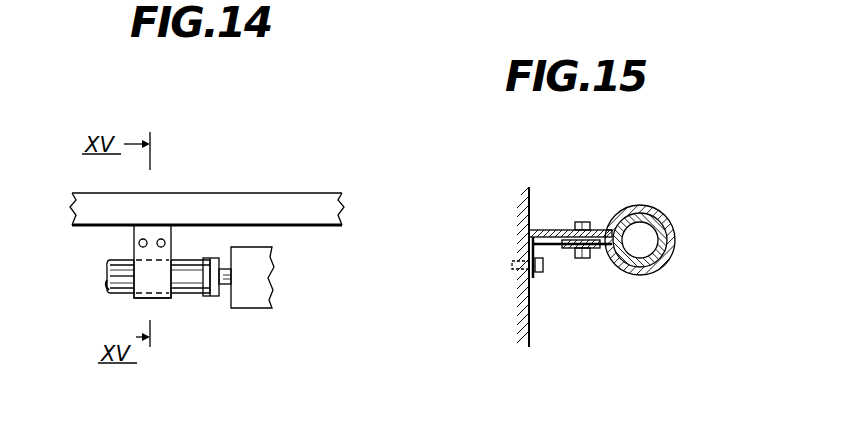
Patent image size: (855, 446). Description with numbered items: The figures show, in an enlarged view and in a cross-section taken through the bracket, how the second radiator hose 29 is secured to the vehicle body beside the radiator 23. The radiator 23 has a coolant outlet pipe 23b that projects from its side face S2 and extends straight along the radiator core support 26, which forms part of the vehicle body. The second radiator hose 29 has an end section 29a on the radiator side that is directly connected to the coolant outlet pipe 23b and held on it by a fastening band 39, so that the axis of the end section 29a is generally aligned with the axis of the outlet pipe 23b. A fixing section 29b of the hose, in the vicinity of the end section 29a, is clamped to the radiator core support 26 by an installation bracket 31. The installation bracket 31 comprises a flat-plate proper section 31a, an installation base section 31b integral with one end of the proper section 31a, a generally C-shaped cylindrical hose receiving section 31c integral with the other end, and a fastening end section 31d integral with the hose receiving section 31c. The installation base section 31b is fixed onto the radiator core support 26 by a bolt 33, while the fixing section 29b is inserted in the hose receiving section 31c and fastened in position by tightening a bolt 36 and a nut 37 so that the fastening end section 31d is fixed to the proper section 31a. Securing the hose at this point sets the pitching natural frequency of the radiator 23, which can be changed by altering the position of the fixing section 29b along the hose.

In FIG. 14, the radiator 23 is at (258, 281).
In FIG. 14, the coolant outlet pipe 23b is at (225, 285).
In FIG. 14, the radiator core support 26 is at (301, 200).
In FIG. 15, the radiator core support 26 is at (520, 210).
In FIG. 14, the second radiator hose 29 is at (105, 283).
In FIG. 15, the second radiator hose 29 is at (667, 266).
In FIG. 14, the end section 29a is at (197, 297).
In FIG. 14, the fixing section 29b is at (148, 286).
In FIG. 15, the installation bracket 31 is at (582, 200).
In FIG. 14, the proper section 31a is at (135, 237).
In FIG. 15, the proper section 31a is at (553, 228).
In FIG. 15, the installation base section 31b is at (528, 247).
In FIG. 14, the hose receiving section 31c is at (165, 300).
In FIG. 15, the hose receiving section 31c is at (651, 211).
In FIG. 15, the fastening end section 31d is at (572, 250).
In FIG. 15, the bolt 33 is at (548, 274).
In FIG. 15, the bolt 36 is at (590, 224).
In FIG. 15, the nut 37 is at (600, 262).
In FIG. 14, the fastening band 39 is at (202, 266).
In FIG. 14, the side face S2 is at (223, 256).